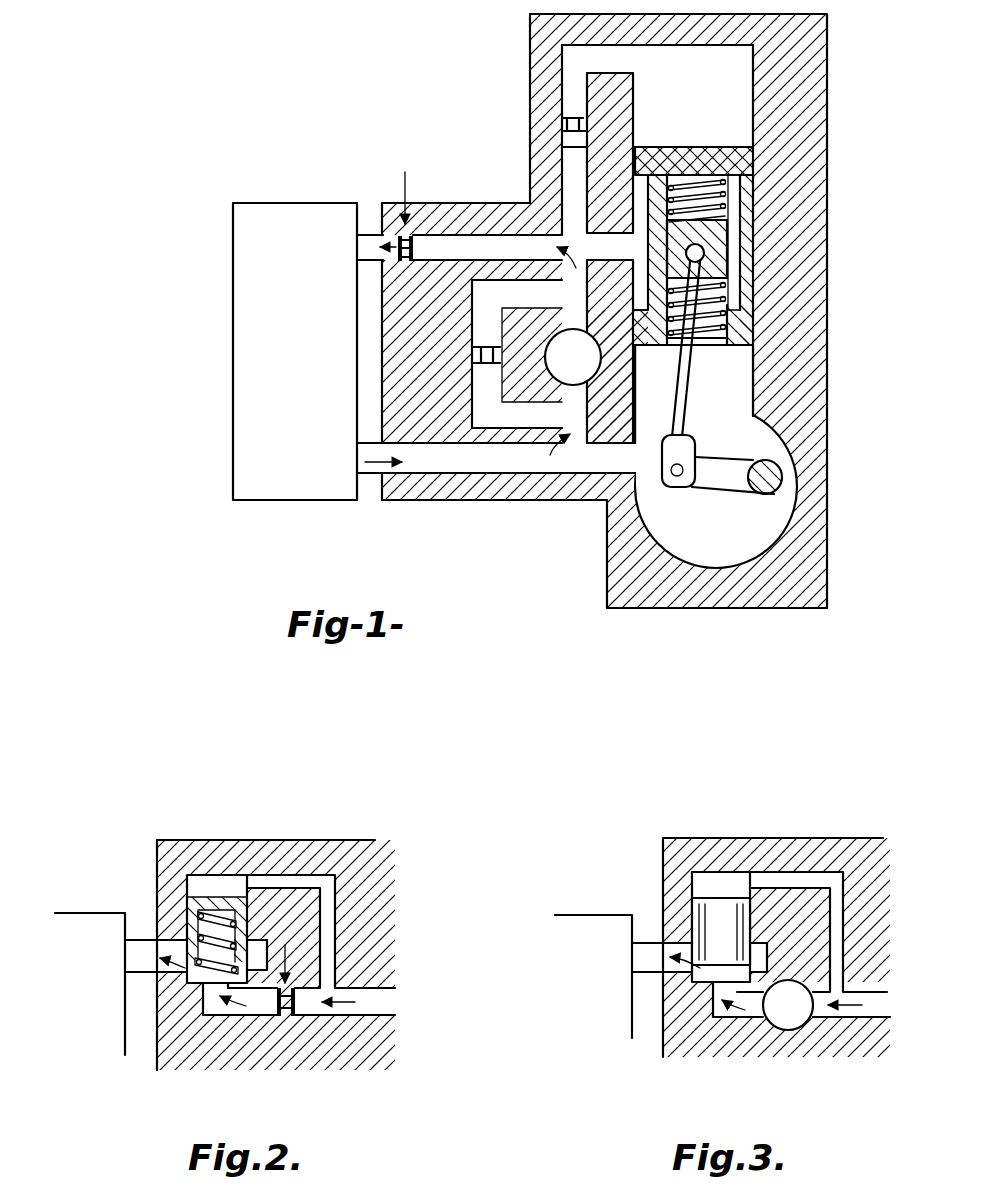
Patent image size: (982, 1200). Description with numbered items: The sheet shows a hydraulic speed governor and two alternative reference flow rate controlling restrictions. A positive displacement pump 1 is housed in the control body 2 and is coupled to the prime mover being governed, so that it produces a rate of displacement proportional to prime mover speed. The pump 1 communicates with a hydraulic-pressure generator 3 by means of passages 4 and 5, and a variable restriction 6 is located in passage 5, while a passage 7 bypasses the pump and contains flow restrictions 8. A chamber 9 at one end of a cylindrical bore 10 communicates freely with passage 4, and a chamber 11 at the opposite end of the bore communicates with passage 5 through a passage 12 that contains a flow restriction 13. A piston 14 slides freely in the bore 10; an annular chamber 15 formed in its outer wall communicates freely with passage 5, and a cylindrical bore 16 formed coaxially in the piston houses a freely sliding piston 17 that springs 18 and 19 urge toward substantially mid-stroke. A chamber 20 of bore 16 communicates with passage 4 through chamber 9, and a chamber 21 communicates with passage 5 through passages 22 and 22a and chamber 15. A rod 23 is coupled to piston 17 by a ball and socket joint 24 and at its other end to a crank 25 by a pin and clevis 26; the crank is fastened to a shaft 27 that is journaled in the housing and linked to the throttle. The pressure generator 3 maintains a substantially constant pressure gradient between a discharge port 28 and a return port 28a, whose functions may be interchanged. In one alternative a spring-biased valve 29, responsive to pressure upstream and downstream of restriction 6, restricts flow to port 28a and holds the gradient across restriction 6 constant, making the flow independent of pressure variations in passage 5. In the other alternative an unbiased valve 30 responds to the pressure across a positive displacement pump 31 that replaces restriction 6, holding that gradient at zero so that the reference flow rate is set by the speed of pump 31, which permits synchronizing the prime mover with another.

In FIG. 1, the positive displacement pump 1 is at (582, 330).
In FIG. 1, the control body 2 is at (530, 45).
In FIG. 2, the control body 2 is at (162, 838).
In FIG. 3, the control body 2 is at (663, 862).
In FIG. 1, the hydraulic-pressure generator 3 is at (268, 203).
In FIG. 2, the hydraulic-pressure generator 3 is at (82, 913).
In FIG. 3, the hydraulic-pressure generator 3 is at (593, 976).
In FIG. 1, the passage 4 is at (431, 465).
In FIG. 1, the passage 5 is at (446, 250).
In FIG. 2, the passage 5 is at (372, 1012).
In FIG. 3, the passage 5 is at (882, 1012).
In FIG. 1, the variable restriction 6 is at (390, 218).
In FIG. 2, the variable restriction 6 is at (285, 1019).
In FIG. 1, the passage 7 is at (483, 392).
In FIG. 1, the flow restrictions 8 is at (478, 345).
In FIG. 1, the chamber 9 is at (734, 412).
In FIG. 1, the cylindrical bore 10 is at (667, 390).
In FIG. 1, the chamber 11 is at (722, 96).
In FIG. 1, the passage 12 is at (575, 90).
In FIG. 1, the flow restriction 13 is at (563, 126).
In FIG. 1, the piston 14 is at (698, 148).
In FIG. 1, the annular chamber 15 is at (743, 255).
In FIG. 1, the cylindrical bore 16 is at (702, 279).
In FIG. 1, the piston 17 is at (741, 238).
In FIG. 1, the spring 18 is at (728, 316).
In FIG. 1, the spring 19 is at (733, 205).
In FIG. 1, the chamber 20 is at (713, 347).
In FIG. 1, the chamber 21 is at (683, 177).
In FIG. 1, the passage 22 is at (640, 182).
In FIG. 1, the passage 22a is at (742, 184).
In FIG. 1, the rod 23 is at (688, 415).
In FIG. 1, the ball and socket joint 24 is at (710, 264).
In FIG. 1, the crank 25 is at (730, 492).
In FIG. 1, the pin and clevis 26 is at (702, 449).
In FIG. 1, the shaft 27 is at (786, 466).
In FIG. 1, the discharge port 28 is at (362, 474).
In FIG. 1, the return port 28a is at (368, 233).
In FIG. 2, the return port 28a is at (127, 958).
In FIG. 3, the return port 28a is at (635, 958).
In FIG. 2, the spring-biased valve 29 is at (215, 890).
In FIG. 3, the unbiased valve 30 is at (722, 893).
In FIG. 3, the positive displacement pump 31 is at (808, 1026).